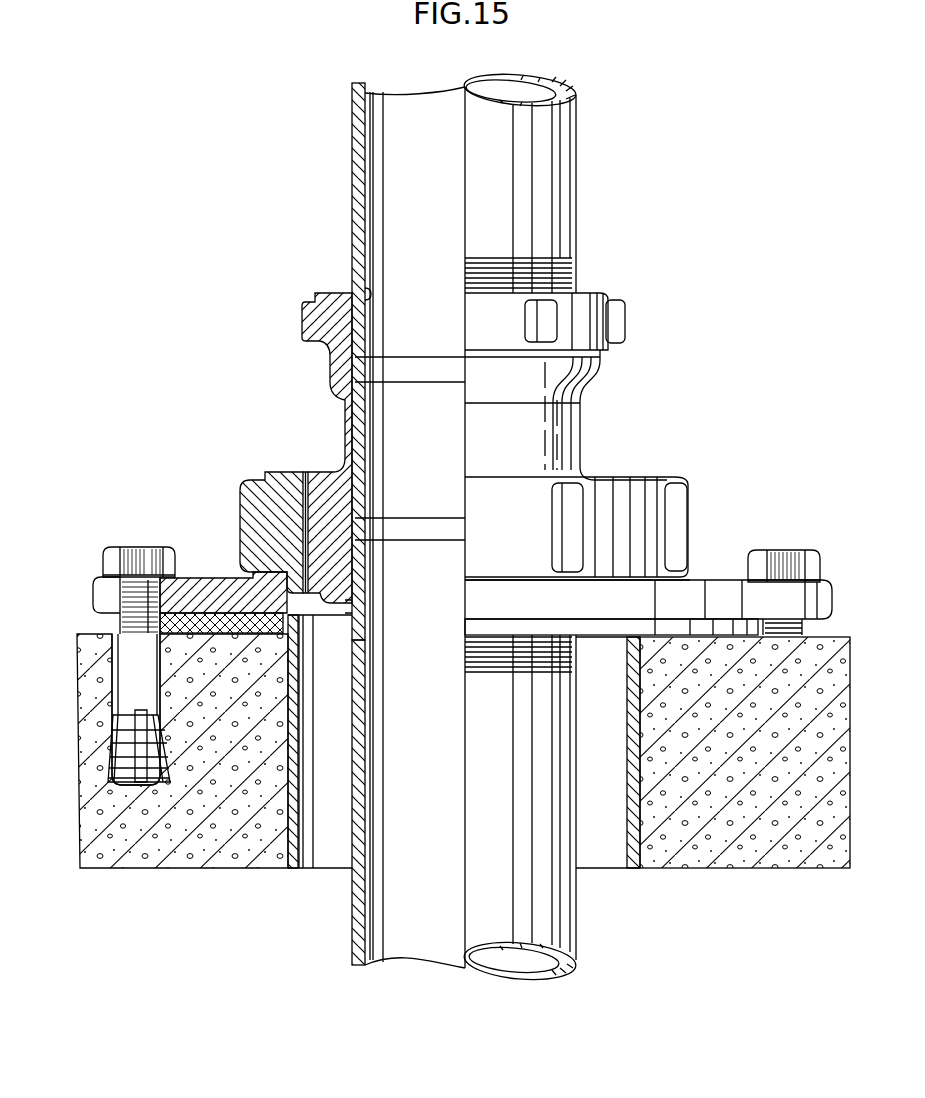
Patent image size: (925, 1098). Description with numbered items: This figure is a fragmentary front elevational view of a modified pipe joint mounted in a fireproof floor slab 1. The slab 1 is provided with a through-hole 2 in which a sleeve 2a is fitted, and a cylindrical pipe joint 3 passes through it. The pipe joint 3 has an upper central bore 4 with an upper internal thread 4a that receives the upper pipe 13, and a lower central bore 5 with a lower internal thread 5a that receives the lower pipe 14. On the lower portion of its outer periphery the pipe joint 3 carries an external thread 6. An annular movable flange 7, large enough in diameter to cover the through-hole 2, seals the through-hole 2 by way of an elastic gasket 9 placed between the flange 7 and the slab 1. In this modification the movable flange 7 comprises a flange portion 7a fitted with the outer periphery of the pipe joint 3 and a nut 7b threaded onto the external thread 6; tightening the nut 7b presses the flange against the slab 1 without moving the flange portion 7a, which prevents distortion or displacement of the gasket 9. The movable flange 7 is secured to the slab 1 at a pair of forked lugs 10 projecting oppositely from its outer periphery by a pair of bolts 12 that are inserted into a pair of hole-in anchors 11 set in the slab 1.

The fireproof floor slab 1 is at (183, 862).
The through-hole 2 is at (330, 858).
The sleeve 2a is at (290, 862).
The cylindrical pipe joint 3 is at (565, 422).
The upper central bore 4 is at (425, 360).
The upper internal thread 4a is at (357, 283).
The lower central bore 5 is at (413, 515).
The lower internal thread 5a is at (362, 587).
The external thread 6 is at (303, 521).
The movable flange 7 is at (718, 582).
The flange portion 7a is at (207, 582).
The nut 7b is at (252, 490).
The elastic gasket 9 is at (235, 620).
The forked lugs 10 is at (100, 600).
The hole-in anchors 11 is at (117, 767).
The bolts 12 is at (133, 547).
The pipe 13 is at (557, 167).
The pipe 14 is at (557, 907).